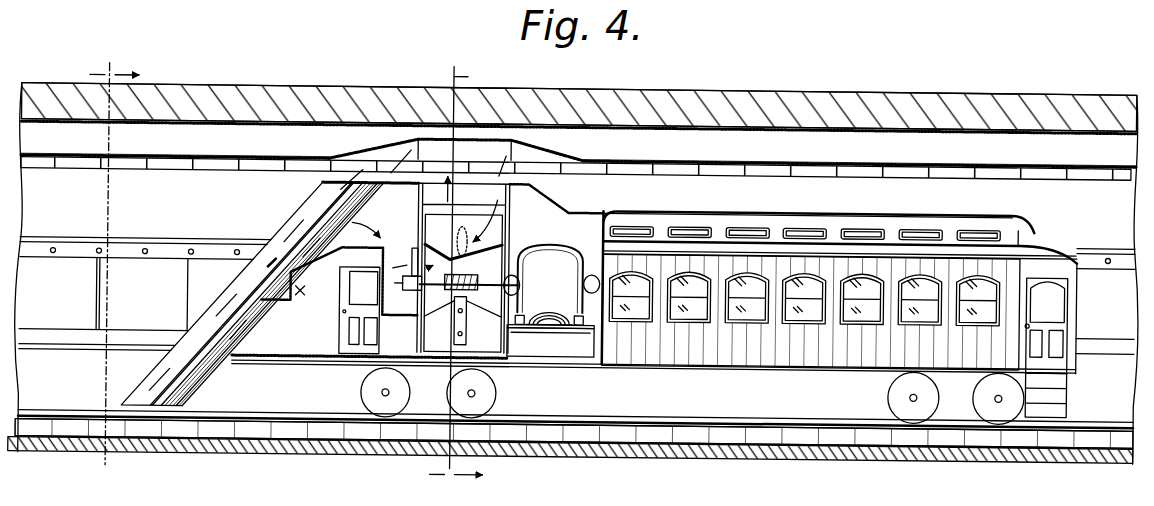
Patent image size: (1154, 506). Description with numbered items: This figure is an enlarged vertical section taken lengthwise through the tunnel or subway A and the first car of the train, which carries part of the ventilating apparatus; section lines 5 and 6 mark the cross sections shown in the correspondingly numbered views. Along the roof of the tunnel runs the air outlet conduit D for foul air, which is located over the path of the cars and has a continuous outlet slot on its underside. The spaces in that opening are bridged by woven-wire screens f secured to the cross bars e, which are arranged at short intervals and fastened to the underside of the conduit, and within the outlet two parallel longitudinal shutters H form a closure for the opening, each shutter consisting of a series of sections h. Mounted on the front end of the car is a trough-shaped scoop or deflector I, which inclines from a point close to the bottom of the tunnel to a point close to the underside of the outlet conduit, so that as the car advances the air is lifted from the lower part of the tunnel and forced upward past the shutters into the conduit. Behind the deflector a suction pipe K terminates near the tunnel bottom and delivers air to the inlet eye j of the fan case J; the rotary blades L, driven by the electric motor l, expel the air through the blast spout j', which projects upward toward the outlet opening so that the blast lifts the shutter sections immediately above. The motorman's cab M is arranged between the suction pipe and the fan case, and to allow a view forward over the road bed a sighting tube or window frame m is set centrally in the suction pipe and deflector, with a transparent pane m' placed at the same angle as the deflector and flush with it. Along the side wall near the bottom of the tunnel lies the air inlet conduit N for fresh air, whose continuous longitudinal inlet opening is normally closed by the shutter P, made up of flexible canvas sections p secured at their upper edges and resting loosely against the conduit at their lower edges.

The tunnel or subway A is at (1068, 218).
The air outlet conduit D is at (740, 149).
The longitudinal shutters H is at (596, 156).
The shutter sections h is at (520, 141).
The cross bars e is at (147, 165).
The screens f is at (60, 170).
The air inlet conduit N is at (112, 233).
The inlet shutter P is at (72, 311).
The shutter sections p is at (570, 299).
The scoop or deflector I is at (196, 364).
The suction pipe K is at (232, 368).
The sighting tube or window frame m is at (310, 298).
The transparent pane m' is at (262, 271).
The motorman's cab M is at (282, 344).
The fan case J is at (416, 338).
The inlet eye j is at (410, 270).
The blast spout j' is at (538, 213).
The fan blades L is at (469, 268).
The electric motor l is at (553, 300).
The section line 5- 5 is at (112, 262).
The section line 6- 6 is at (458, 282).